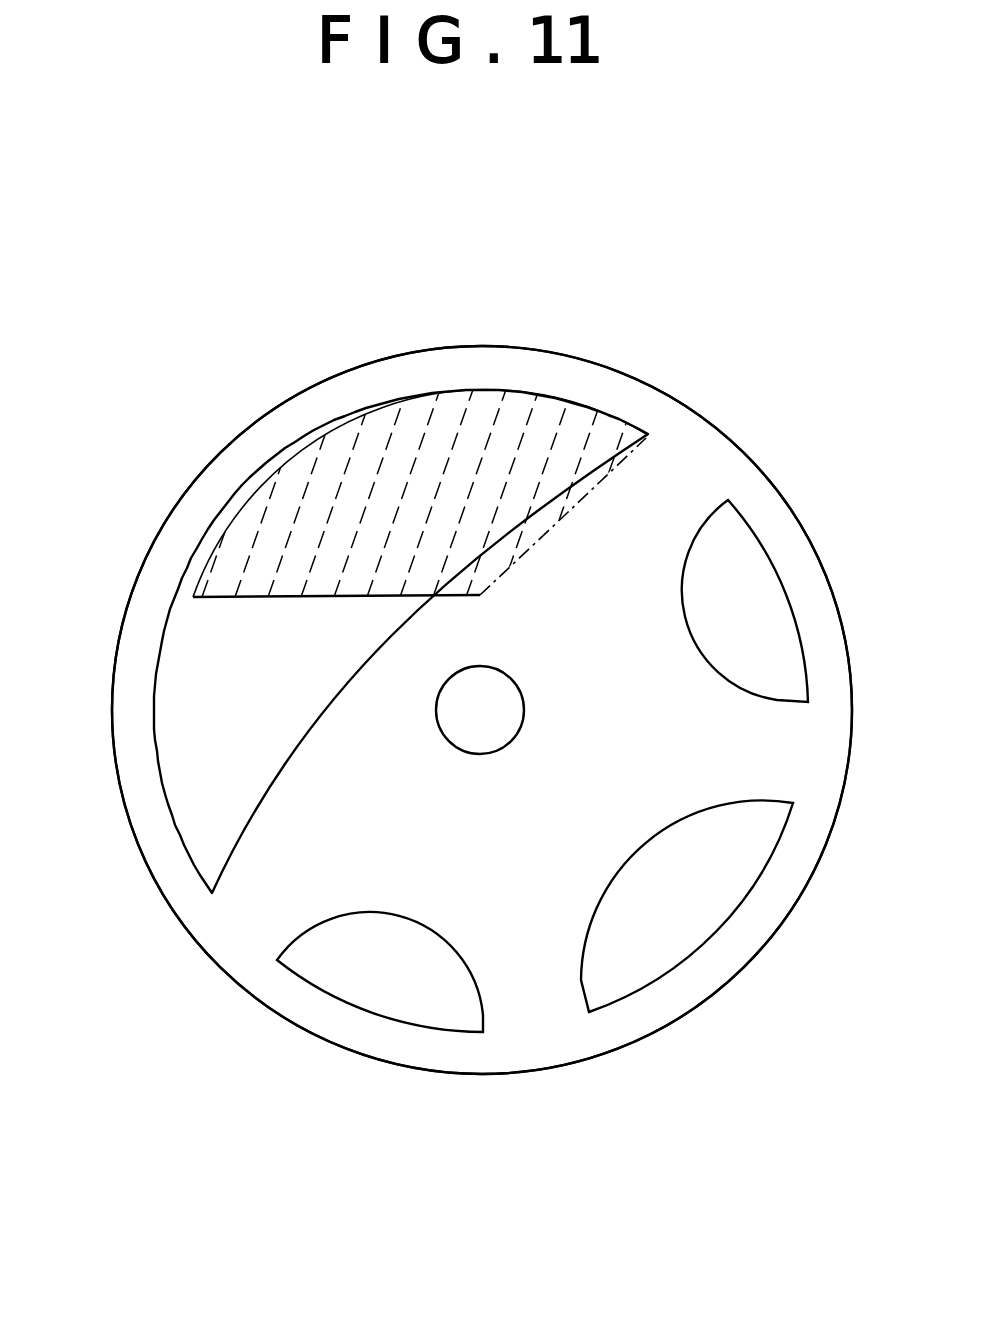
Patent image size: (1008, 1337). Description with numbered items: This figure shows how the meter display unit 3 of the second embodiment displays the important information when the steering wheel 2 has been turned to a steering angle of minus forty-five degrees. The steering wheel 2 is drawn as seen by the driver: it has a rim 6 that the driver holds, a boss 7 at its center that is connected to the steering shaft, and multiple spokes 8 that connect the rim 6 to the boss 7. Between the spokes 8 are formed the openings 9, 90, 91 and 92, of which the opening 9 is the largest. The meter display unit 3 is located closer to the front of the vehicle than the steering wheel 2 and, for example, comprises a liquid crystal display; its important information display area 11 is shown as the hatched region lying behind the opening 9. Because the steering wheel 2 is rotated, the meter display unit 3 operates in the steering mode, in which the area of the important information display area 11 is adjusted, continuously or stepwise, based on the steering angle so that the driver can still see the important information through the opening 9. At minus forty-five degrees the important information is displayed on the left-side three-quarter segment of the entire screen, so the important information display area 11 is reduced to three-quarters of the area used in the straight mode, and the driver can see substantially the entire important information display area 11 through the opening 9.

The steering wheel 2 is at (725, 432).
The meter display unit 3 is at (225, 570).
The rim 6 is at (330, 403).
The boss 7 is at (498, 697).
The spokes 8 is at (645, 493).
The opening 9 is at (195, 748).
The important information display area 11 is at (445, 437).
The opening 90 is at (782, 635).
The opening 91 is at (693, 907).
The opening 92 is at (380, 970).